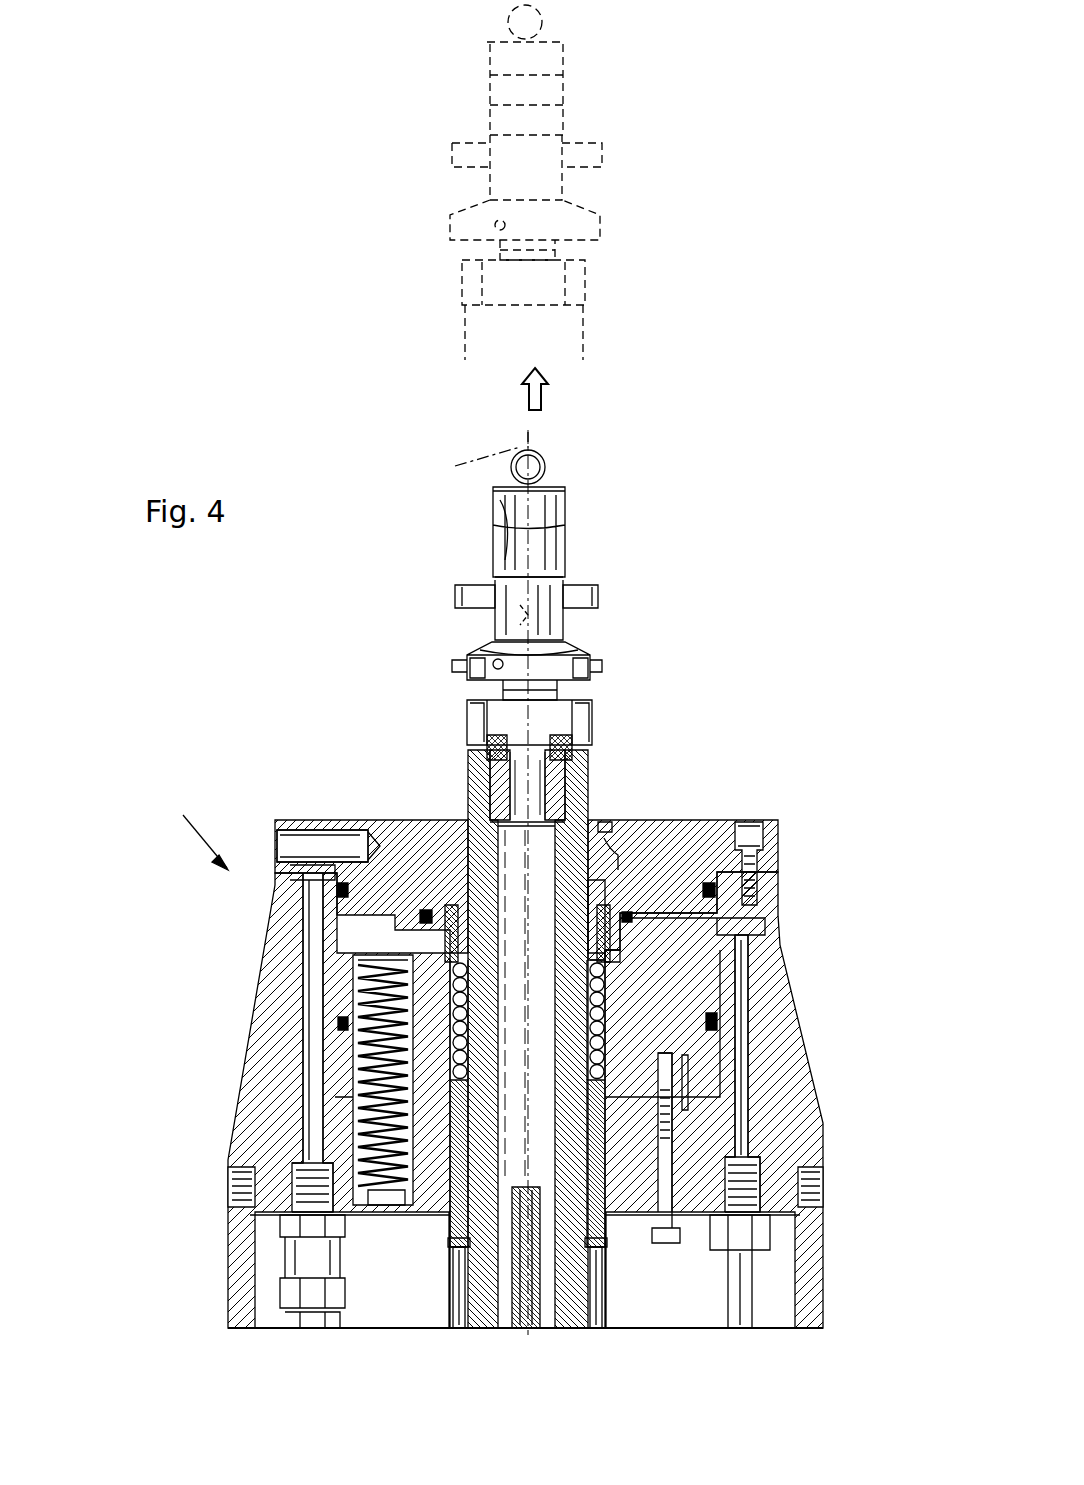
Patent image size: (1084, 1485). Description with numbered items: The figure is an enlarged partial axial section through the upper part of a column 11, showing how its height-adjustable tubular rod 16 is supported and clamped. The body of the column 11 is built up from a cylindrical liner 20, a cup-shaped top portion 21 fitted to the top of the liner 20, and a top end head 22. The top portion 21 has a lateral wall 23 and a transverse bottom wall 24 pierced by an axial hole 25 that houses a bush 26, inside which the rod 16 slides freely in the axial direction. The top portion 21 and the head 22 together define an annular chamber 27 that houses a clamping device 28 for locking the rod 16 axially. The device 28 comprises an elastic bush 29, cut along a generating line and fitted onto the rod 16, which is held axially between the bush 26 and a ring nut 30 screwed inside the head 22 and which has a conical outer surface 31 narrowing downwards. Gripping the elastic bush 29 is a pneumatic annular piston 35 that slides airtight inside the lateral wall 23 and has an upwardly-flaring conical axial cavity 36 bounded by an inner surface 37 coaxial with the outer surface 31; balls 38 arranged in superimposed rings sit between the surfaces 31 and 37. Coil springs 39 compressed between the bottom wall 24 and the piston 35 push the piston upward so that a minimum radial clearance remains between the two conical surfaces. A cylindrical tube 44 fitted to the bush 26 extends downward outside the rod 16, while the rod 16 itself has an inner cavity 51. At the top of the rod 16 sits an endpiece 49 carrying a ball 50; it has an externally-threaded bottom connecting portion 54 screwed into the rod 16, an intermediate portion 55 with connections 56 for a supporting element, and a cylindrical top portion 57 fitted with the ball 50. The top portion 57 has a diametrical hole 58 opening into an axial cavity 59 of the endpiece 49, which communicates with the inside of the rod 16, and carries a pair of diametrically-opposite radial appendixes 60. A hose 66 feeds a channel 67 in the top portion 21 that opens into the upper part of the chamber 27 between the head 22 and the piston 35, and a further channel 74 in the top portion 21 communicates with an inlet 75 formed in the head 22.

The column 11 is at (193, 824).
The tubular rod 16 is at (470, 772).
The cylindrical liner 20 is at (808, 1305).
The top portion 21 is at (812, 1130).
The top end head 22 is at (700, 826).
The lateral wall 23 is at (780, 1045).
The transverse bottom wall 24 is at (618, 1195).
The axial hole 25 is at (452, 1180).
The bush 26 is at (662, 1187).
The annular chamber 27 is at (364, 922).
The clamping device 28 is at (652, 986).
The elastic bush 29 is at (614, 998).
The ring nut 30 is at (620, 820).
The conical outer surface 31 is at (608, 1025).
The pneumatic annular piston 35 is at (690, 1100).
The axial cavity 36 is at (600, 1028).
The inner surface 37 is at (455, 1014).
The balls 38 is at (466, 992).
The coil springs 39 is at (364, 1141).
The cylindrical tube 44 is at (603, 1298).
The endpiece 49 is at (598, 222).
The ball 50 is at (546, 466).
The inner cavity 51 is at (540, 916).
The bottom connecting portion 54 is at (575, 740).
The intermediate portion 55 is at (542, 652).
The connections 56 is at (570, 683).
The top portion 57 is at (546, 562).
The diametrical hole 58 is at (500, 519).
The axial cavity 59 is at (496, 620).
The radial appendixes 60 is at (455, 597).
The hose 66 is at (752, 1277).
The channel 67 is at (737, 1140).
The channel 74 is at (318, 988).
The inlet 75 is at (300, 848).